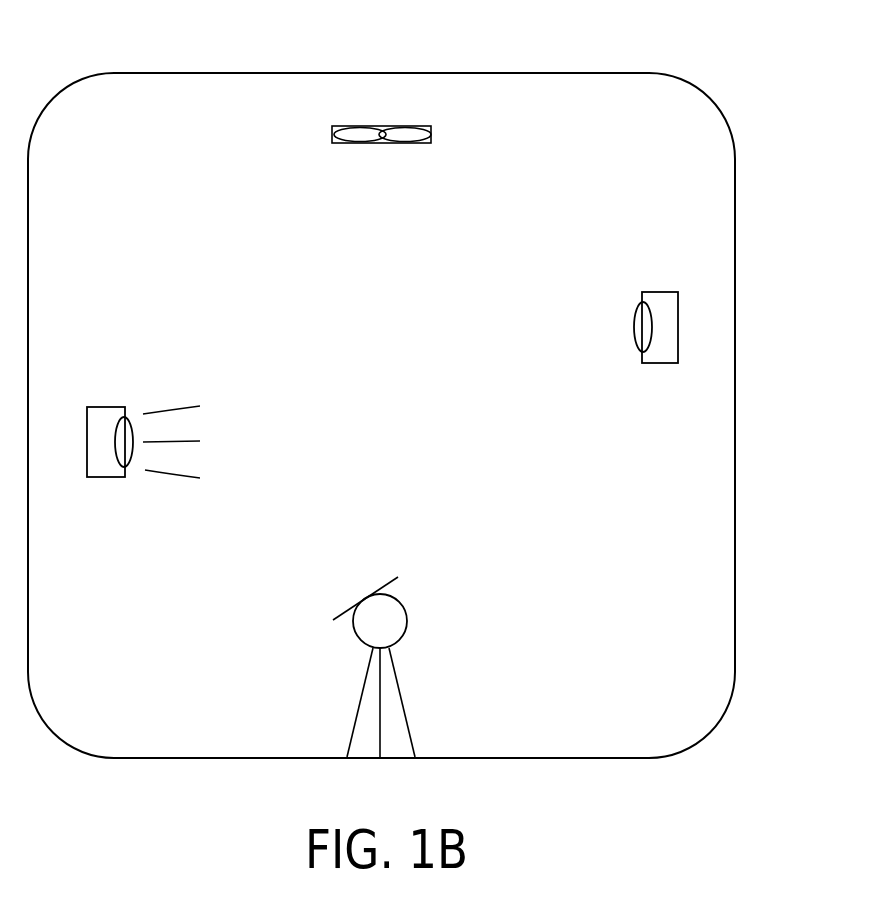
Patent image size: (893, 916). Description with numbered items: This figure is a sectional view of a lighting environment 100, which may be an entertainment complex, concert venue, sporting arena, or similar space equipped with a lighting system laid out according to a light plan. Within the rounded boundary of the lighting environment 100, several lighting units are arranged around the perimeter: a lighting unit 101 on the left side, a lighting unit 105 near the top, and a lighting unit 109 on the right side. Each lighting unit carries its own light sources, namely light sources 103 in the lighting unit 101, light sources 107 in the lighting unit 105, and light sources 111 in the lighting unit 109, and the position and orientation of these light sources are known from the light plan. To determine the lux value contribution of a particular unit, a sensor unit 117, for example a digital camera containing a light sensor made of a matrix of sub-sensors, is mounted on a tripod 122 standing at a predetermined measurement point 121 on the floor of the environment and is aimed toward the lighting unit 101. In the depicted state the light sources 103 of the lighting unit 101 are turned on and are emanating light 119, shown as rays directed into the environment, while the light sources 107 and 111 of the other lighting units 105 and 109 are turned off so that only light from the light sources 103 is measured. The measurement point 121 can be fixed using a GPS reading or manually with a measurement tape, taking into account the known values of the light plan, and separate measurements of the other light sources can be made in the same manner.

The lighting environment 100 is at (707, 85).
The lighting unit 101 is at (103, 415).
The light sources 103 is at (124, 450).
The lighting unit 105 is at (431, 129).
The light sources 107 is at (354, 137).
The lighting unit 109 is at (663, 309).
The light sources 111 is at (641, 333).
The sensor unit 117 is at (397, 622).
The light 119 is at (203, 410).
The measurement point 121 is at (365, 594).
The tripod 122 is at (395, 708).